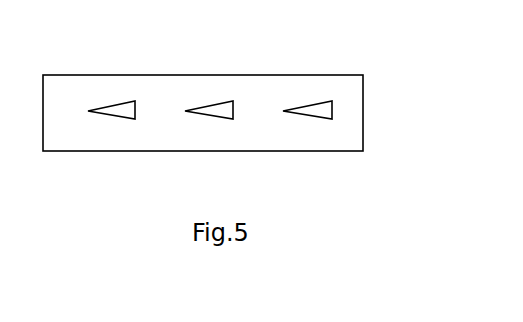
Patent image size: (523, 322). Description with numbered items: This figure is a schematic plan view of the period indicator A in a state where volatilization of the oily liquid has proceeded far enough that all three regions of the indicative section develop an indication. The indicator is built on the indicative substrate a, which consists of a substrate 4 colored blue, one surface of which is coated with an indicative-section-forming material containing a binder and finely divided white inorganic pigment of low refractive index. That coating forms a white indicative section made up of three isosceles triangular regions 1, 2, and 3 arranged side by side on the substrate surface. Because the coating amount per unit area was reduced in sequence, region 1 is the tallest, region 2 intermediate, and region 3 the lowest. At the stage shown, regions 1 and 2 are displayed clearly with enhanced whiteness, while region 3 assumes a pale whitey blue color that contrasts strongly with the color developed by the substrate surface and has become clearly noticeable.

The region 1 is at (293, 113).
The region 2 is at (197, 113).
The region 3 is at (95, 113).
The substrate 4 is at (352, 137).
The indicative substrate a is at (277, 75).
The period indicator A is at (181, 57).